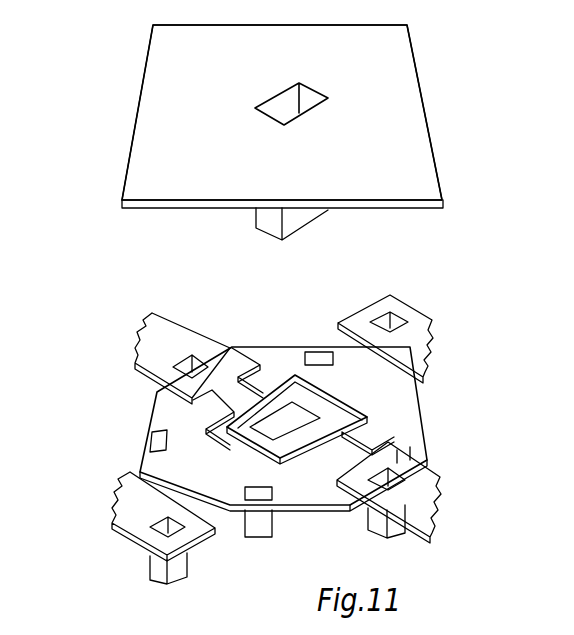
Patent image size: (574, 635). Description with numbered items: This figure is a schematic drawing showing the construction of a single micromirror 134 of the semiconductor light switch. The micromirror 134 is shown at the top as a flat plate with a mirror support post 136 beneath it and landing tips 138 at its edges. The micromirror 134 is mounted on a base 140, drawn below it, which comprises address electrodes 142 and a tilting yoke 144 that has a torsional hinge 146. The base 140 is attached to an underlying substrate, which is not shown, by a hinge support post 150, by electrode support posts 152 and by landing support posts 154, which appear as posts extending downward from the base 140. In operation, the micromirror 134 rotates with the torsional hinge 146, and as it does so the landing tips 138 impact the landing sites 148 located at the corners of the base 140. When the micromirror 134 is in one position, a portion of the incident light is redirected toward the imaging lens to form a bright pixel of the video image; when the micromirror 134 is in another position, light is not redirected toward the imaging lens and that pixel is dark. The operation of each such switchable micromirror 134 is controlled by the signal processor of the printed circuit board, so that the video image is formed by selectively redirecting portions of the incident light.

The micromirror 134 is at (246, 77).
The mirror support post 136 is at (296, 222).
The landing tips 138 is at (410, 25).
The base 140 is at (420, 422).
The address electrodes 142 is at (277, 352).
The tilting yoke 144 is at (283, 440).
The torsional hinge 146 is at (227, 395).
The landing sites 148 is at (410, 335).
The hinge support post 150 is at (400, 528).
The electrode support posts 152 is at (258, 528).
The landing support posts 154 is at (178, 573).